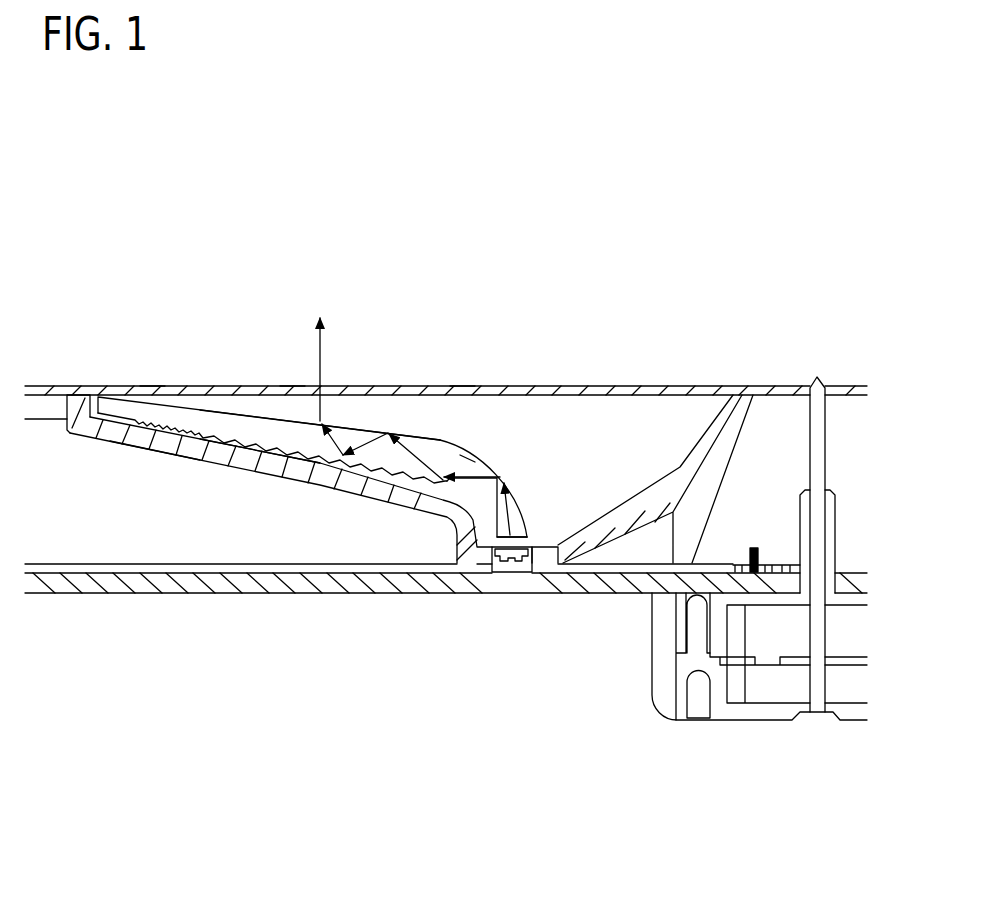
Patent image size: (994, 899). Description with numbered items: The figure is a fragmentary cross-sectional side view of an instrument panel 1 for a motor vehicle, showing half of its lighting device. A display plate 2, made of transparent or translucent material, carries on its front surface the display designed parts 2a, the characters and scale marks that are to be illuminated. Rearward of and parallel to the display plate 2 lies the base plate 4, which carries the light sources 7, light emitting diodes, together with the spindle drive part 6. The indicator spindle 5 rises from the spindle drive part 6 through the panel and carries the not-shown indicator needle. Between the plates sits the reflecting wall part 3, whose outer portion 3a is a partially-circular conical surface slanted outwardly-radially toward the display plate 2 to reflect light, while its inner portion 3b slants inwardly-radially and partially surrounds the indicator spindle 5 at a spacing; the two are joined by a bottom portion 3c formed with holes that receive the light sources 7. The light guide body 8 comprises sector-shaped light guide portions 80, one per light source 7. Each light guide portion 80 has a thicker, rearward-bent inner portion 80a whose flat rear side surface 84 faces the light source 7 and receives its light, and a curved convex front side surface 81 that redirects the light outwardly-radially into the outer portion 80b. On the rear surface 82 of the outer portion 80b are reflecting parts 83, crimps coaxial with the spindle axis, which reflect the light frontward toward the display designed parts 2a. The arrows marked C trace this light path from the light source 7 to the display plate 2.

The instrument panel 1 is at (634, 336).
The display plate 2 is at (177, 385).
The display designed parts 2a is at (152, 387).
The reflecting wall part 3 is at (164, 465).
The outer portion 3a is at (138, 450).
The inner portion 3b is at (732, 460).
The bottom portion 3c is at (545, 560).
The base plate 4 is at (595, 593).
The indicator spindle 5 is at (825, 445).
The spindle drive part 6 is at (740, 721).
The light source 7 is at (487, 570).
The light guide body 8 is at (502, 463).
The light guide portion 80 is at (468, 463).
The inner portion 80a is at (530, 496).
The outer portion 80b is at (363, 425).
The front side surface 81 is at (468, 458).
The rear surface 82 is at (238, 446).
The reflecting parts 83 is at (277, 460).
The rear side surface 84 is at (524, 538).
The light ray C is at (322, 352).